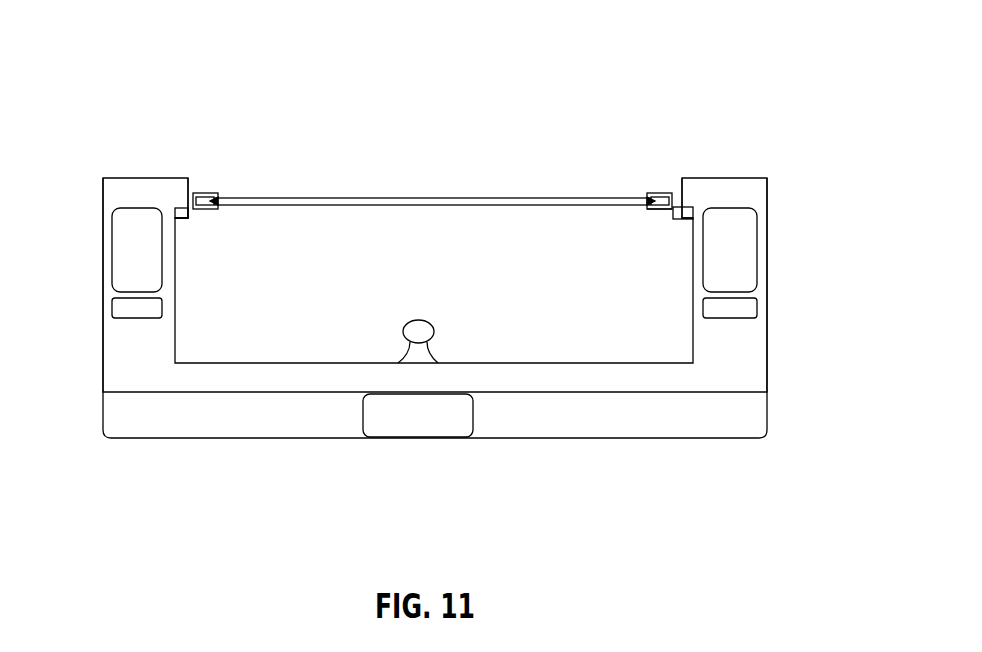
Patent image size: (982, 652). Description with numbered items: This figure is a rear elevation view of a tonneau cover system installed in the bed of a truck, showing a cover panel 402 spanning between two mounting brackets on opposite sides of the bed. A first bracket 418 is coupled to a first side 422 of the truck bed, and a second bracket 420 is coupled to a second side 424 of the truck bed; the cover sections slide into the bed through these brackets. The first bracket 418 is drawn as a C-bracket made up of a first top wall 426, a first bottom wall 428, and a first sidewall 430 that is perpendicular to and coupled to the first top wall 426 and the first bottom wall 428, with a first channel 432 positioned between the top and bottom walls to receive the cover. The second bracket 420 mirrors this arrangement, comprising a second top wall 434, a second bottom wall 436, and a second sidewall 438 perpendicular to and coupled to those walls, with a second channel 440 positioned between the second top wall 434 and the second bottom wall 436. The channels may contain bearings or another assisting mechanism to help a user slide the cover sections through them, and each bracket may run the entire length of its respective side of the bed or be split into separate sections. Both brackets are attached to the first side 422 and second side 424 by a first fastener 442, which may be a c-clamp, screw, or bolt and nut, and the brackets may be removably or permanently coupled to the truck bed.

The panel 402 is at (462, 198).
The first bracket 418 is at (197, 193).
The second bracket 420 is at (677, 207).
The first side 422 is at (122, 373).
The second side 424 is at (750, 373).
The first top wall 426 is at (205, 193).
The first bottom wall 428 is at (210, 209).
The first sidewall 430 is at (198, 209).
The first channel 432 is at (219, 197).
The second top wall 434 is at (658, 193).
The second bottom wall 436 is at (660, 209).
The second sidewall 438 is at (676, 200).
The second channel 440 is at (649, 197).
The first fastener 442 is at (174, 213).